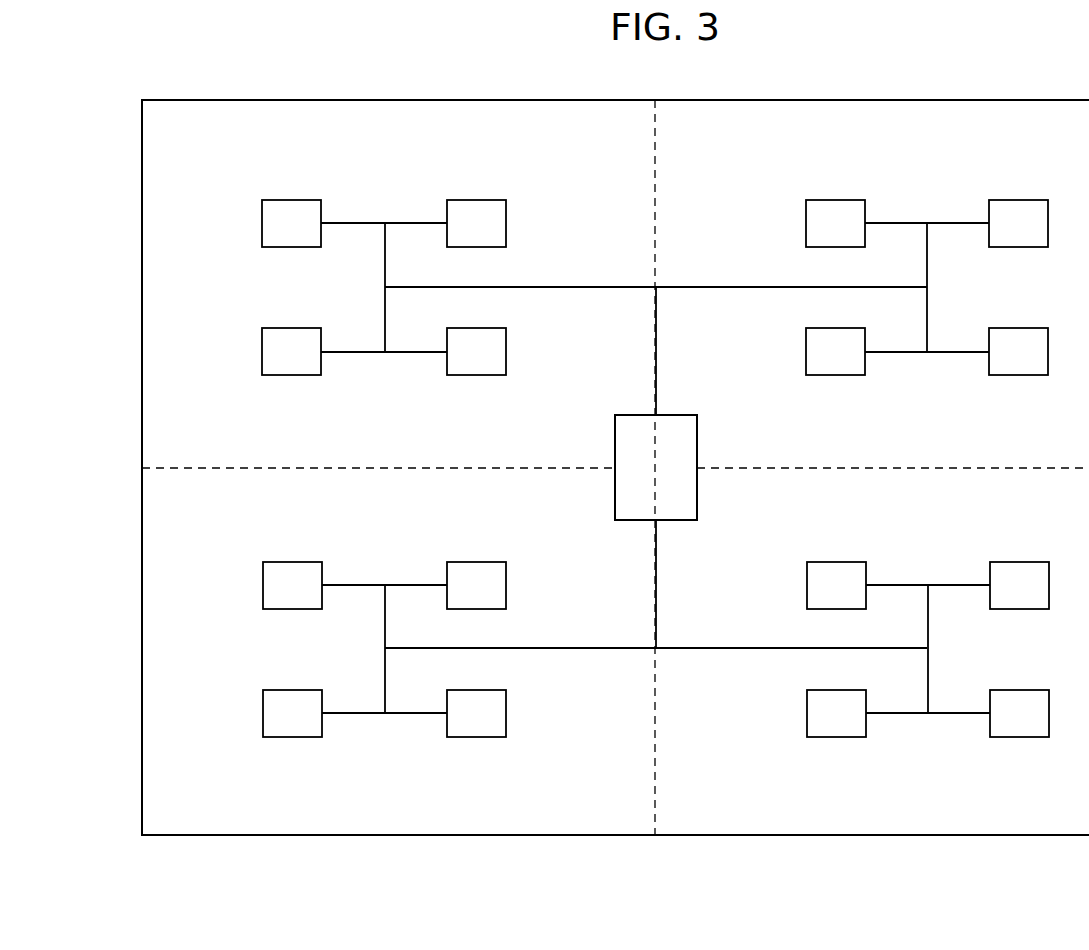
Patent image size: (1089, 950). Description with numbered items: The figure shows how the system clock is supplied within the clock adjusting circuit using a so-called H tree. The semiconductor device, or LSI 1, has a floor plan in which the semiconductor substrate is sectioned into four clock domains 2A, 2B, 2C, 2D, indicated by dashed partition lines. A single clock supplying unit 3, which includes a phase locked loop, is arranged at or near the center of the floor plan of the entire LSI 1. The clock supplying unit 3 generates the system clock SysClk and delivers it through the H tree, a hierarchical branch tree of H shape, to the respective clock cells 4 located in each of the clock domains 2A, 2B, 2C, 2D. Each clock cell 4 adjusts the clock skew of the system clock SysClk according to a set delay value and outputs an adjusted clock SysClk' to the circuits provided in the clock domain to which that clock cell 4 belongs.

The semiconductor device (LSI) 1 is at (172, 100).
The clock domain 2A is at (407, 835).
The clock domain 2B is at (407, 100).
The clock domain 2C is at (915, 100).
The clock domain 2D is at (905, 835).
The clock supplying unit 3 is at (672, 415).
The clock cell 4 is at (282, 200).